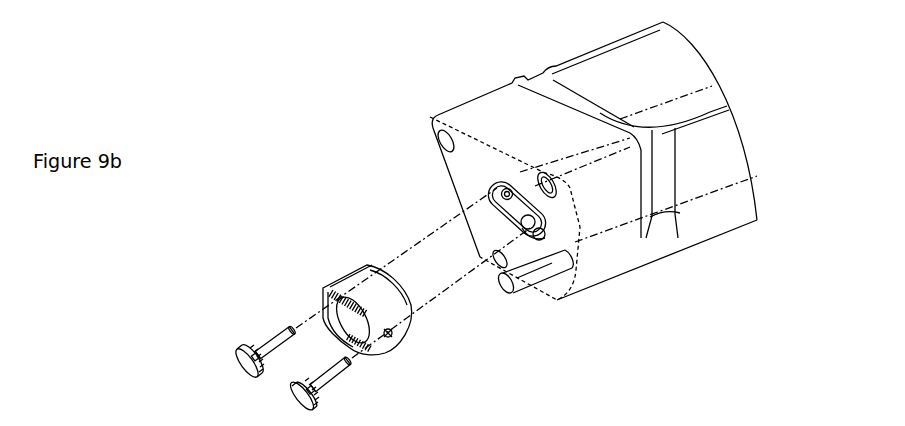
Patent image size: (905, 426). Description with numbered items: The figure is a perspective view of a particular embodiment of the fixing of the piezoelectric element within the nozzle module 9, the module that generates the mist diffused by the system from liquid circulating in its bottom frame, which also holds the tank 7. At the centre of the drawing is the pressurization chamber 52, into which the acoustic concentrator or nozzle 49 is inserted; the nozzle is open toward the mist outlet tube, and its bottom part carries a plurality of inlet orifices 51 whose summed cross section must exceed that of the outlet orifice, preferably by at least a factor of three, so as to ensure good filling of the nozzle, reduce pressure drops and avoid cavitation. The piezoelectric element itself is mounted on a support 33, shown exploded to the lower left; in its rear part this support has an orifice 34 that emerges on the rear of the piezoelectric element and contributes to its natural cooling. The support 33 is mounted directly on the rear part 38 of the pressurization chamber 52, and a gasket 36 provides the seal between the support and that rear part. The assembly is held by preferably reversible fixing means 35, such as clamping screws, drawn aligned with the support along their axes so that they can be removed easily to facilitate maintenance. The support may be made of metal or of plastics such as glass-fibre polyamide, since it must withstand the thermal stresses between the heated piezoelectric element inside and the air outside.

The tank 7 is at (632, 75).
The nozzle module 9 is at (420, 87).
The support 33 is at (411, 333).
The orifice 34 is at (365, 317).
The fixing means 35 is at (282, 334).
The gasket 36 is at (378, 272).
The rear part of the pressurization chamber 38 is at (465, 172).
The acoustic concentrator (nozzle) 49 is at (513, 207).
The inlet orifices 51 is at (506, 192).
The pressurization chamber 52 is at (600, 218).